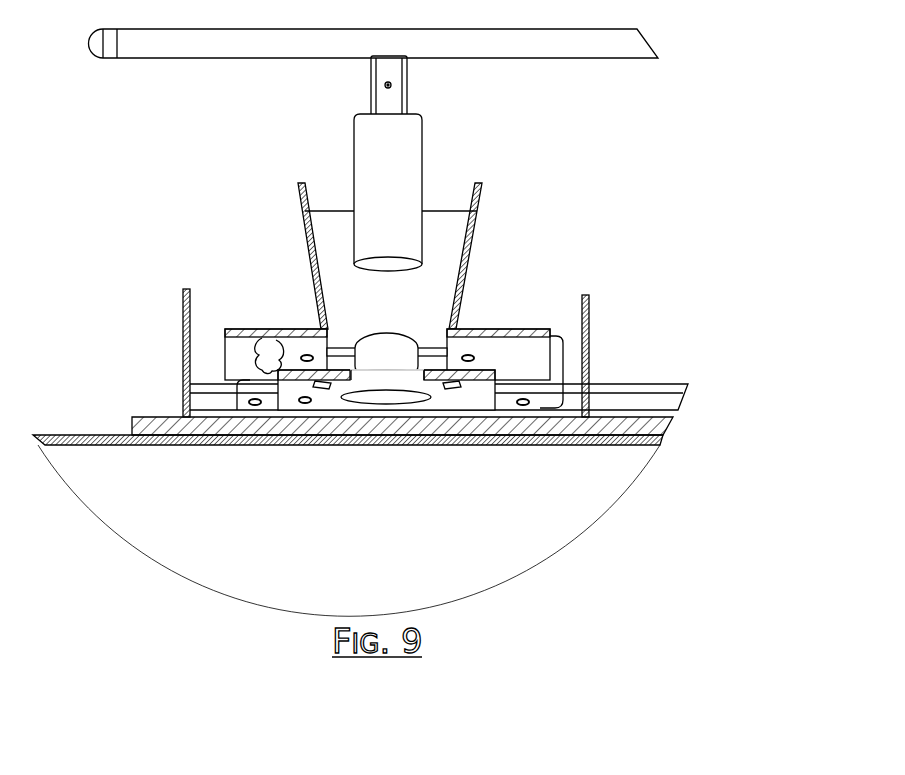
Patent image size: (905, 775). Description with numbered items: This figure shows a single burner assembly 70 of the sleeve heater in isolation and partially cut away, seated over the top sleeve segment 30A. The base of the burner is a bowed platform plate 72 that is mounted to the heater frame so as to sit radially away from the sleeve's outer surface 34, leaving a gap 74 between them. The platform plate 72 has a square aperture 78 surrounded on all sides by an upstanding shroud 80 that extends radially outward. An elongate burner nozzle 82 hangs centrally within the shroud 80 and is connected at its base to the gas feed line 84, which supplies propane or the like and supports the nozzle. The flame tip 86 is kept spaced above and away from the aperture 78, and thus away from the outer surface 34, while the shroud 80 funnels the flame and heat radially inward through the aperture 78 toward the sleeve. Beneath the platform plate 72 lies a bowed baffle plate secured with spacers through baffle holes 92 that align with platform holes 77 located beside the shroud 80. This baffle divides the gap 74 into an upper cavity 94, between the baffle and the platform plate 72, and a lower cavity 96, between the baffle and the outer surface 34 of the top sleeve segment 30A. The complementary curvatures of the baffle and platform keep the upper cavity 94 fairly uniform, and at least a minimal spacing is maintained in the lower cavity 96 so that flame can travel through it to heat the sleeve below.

The top sleeve segment 30A is at (649, 426).
The sleeve outer surface 34 is at (679, 418).
The burner assembly 70 is at (623, 157).
The platform plate 72 is at (536, 321).
The gap 74 is at (568, 362).
The platform holes 77 is at (288, 353).
The aperture 78 is at (426, 326).
The shroud 80 is at (491, 197).
The burner nozzle 82 is at (396, 149).
The gas feed line 84 is at (195, 63).
The flame tip 86 is at (383, 256).
The baffle holes 92 is at (318, 400).
The upper cavity 94 is at (252, 352).
The lower cavity 96 is at (229, 400).